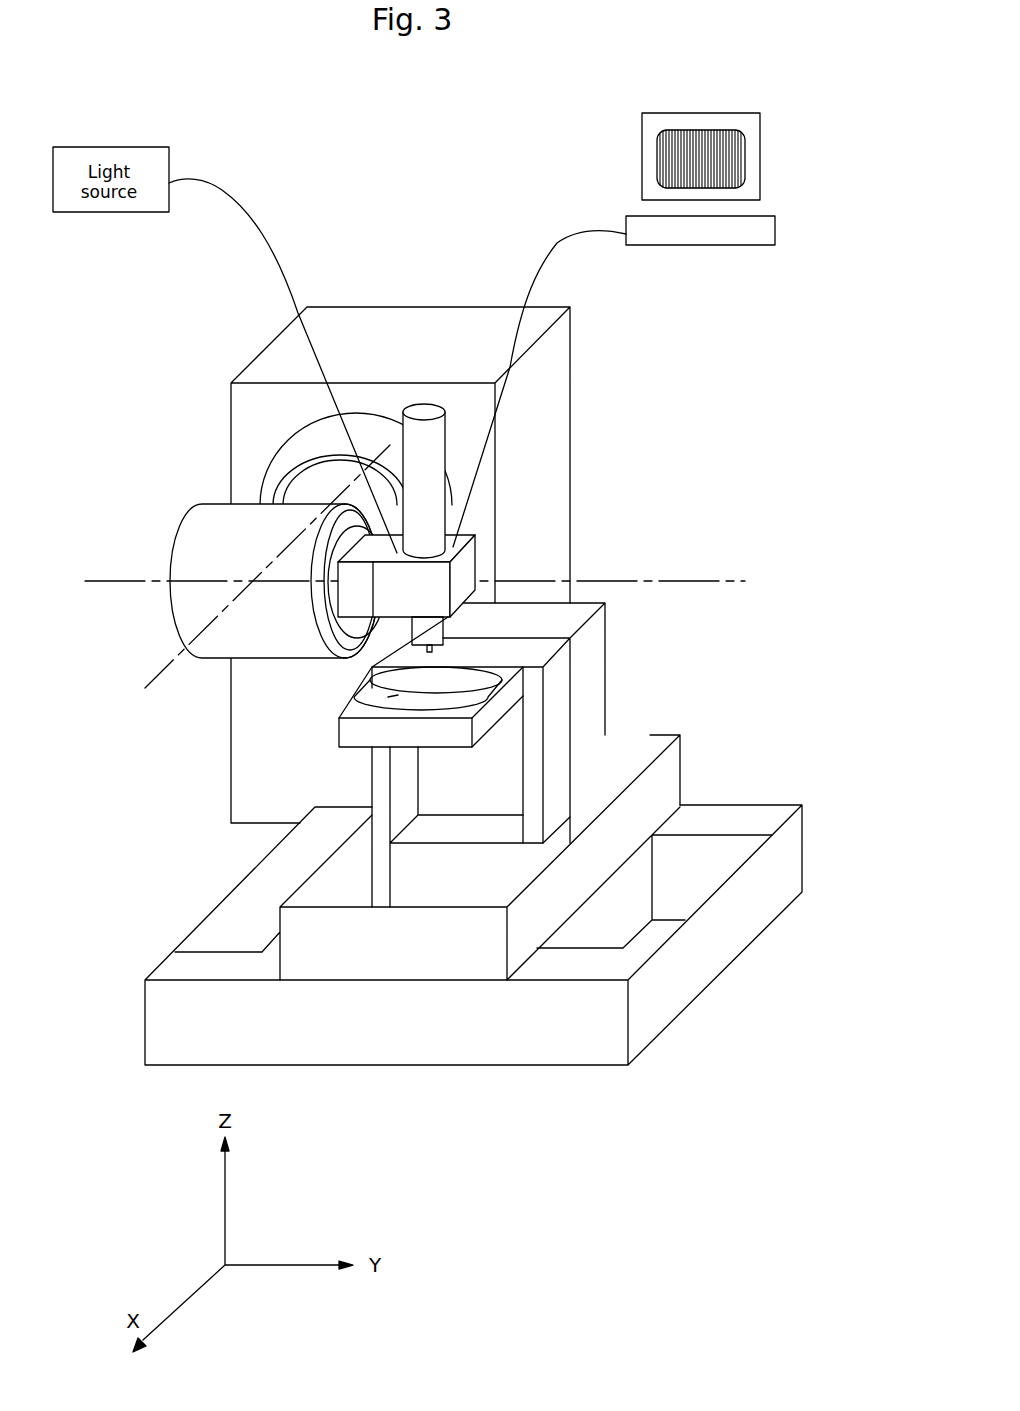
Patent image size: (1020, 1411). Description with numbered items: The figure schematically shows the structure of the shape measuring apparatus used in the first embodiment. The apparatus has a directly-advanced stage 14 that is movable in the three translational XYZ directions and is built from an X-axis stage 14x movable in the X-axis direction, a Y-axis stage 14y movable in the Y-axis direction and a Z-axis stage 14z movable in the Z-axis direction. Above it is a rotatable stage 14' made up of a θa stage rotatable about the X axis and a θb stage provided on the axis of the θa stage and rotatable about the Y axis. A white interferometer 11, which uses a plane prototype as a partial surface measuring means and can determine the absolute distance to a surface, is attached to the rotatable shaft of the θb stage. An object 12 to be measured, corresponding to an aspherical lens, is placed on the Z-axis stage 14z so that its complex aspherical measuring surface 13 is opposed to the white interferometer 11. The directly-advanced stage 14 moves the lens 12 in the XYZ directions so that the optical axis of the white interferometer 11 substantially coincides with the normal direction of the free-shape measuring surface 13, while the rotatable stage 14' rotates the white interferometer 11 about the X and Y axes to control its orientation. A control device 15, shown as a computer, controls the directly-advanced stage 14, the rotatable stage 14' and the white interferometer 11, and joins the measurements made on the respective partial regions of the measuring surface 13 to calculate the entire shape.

The white interferometer 11 is at (458, 574).
The object to be measured 12 is at (388, 697).
The measuring surface 13 is at (467, 668).
The directly-advanced stage 14 is at (507, 874).
The rotatable stage 14' is at (260, 522).
The X-axis stage 14x is at (650, 797).
The Y-axis stage 14y is at (473, 935).
The Z-axis stage 14z is at (560, 745).
The control device 15 is at (698, 245).